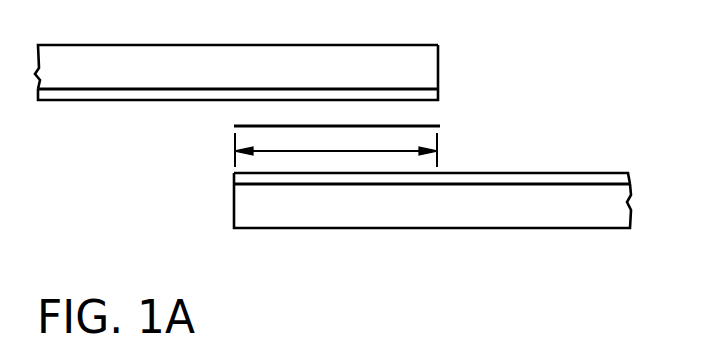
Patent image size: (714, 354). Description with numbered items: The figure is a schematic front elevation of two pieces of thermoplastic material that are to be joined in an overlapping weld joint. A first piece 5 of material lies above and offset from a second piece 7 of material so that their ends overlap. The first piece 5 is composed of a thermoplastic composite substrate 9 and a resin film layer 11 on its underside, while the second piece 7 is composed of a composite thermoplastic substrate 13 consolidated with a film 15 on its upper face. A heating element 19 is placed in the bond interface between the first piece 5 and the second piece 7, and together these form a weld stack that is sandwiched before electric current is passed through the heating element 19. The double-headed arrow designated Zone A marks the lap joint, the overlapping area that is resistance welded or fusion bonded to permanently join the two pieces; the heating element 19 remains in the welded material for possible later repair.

The first piece of material 5 is at (269, 78).
The second piece of material 7 is at (388, 207).
The thermoplastic composite substrate 9 is at (418, 70).
The resin film layer 11 is at (108, 95).
The composite thermoplastic substrate 13 is at (538, 217).
The film 15 is at (528, 175).
The heating element 19 is at (407, 127).
The Zone A is at (335, 152).